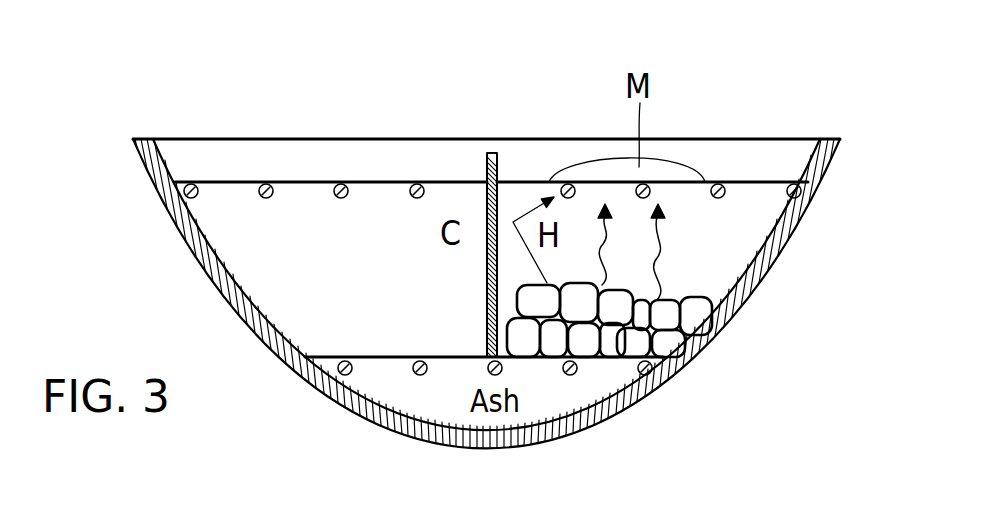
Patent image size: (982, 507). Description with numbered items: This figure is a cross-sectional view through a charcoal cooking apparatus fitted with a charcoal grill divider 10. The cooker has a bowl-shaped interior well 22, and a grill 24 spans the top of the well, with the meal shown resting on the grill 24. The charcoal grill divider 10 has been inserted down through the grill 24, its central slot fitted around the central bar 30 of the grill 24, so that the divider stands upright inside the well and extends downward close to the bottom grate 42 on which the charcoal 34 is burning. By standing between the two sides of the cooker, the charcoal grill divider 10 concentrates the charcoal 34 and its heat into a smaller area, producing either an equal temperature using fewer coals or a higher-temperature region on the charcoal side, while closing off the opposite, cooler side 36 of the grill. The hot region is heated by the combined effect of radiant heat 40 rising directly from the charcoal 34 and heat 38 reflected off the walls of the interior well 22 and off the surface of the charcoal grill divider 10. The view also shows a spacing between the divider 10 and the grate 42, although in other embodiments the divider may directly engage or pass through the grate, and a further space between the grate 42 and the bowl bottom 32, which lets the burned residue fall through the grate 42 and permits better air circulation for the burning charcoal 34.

The charcoal grill divider 10 is at (497, 152).
The interior well 22 is at (850, 165).
The grill 24 is at (324, 150).
The central bar 30 is at (768, 183).
The bowl bottom wall 32 is at (542, 435).
The charcoal 34 is at (693, 315).
The empty chamber 36 is at (316, 261).
The reflected heat 38 is at (547, 279).
The radiant heat 40 is at (675, 256).
The bottom grate 42 is at (368, 358).